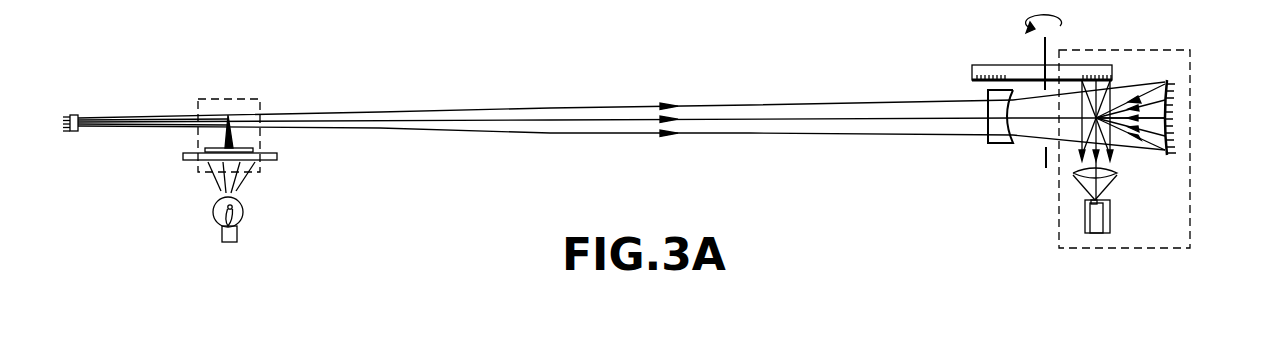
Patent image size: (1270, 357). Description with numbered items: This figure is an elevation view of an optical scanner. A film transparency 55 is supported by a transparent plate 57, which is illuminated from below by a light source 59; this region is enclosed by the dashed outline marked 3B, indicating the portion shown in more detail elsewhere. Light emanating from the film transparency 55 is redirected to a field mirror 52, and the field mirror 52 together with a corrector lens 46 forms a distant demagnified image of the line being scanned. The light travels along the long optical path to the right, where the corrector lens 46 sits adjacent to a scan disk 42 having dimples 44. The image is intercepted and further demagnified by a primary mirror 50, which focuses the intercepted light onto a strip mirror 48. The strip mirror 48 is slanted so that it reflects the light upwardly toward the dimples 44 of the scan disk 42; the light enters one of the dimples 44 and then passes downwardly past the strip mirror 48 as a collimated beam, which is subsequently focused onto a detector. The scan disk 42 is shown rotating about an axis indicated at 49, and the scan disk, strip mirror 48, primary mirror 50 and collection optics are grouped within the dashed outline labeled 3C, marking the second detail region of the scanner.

The field mirror 52 is at (77, 114).
The detail region of FIG. 3B is at (243, 99).
The film transparency 55 is at (248, 150).
The transparent plate 57 is at (277, 160).
The light source 59 is at (244, 219).
The scan disk 42 is at (990, 64).
The dimples 44 is at (987, 80).
The corrector lens 46 is at (990, 142).
The strip mirror 48 is at (1095, 119).
The rotation axis 49 is at (1045, 151).
The primary mirror 50 is at (1168, 81).
The detail region of FIG. 3C is at (1190, 194).